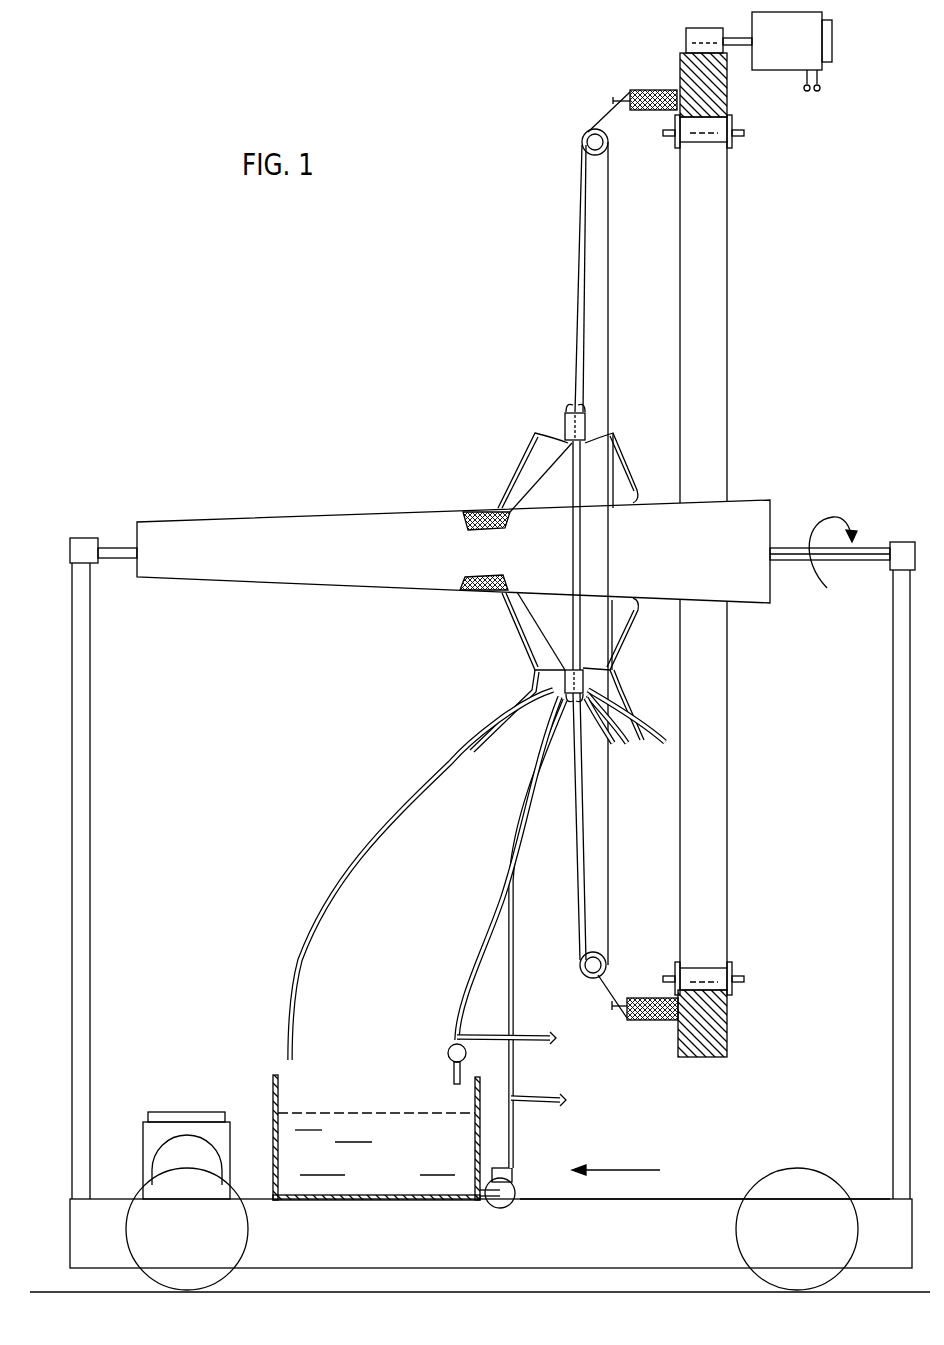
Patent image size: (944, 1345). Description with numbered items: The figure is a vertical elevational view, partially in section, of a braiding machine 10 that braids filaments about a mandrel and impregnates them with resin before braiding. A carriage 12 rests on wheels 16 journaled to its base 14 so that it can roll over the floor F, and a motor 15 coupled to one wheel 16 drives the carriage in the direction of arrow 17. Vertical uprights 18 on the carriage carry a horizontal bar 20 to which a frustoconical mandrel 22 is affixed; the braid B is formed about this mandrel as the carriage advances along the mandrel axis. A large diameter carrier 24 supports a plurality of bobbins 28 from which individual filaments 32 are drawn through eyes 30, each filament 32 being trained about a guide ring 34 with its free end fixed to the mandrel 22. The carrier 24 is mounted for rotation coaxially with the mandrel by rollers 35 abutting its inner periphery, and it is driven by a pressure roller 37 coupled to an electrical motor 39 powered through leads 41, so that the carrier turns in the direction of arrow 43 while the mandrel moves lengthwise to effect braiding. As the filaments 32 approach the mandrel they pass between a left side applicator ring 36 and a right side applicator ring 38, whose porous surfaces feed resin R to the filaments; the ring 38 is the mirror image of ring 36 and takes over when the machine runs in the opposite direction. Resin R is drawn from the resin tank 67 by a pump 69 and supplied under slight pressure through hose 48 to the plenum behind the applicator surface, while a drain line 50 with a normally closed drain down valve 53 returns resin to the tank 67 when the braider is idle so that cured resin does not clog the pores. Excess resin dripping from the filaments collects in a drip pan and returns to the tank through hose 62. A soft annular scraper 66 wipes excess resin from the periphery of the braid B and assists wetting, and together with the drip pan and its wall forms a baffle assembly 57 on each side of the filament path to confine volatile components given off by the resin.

The braiding machine 10 is at (388, 380).
The carriage 12 is at (66, 1229).
The base 14 is at (662, 1214).
The motor 15 is at (186, 1136).
The wheels 16 is at (232, 1226).
The arrow 17 is at (600, 1170).
The vertical uprights 18 is at (90, 924).
The horizontal bar 20 is at (795, 549).
The mandrel 22 is at (306, 526).
The carrier 24 is at (724, 322).
The bobbins 28 is at (648, 94).
The eyes 30 is at (612, 1010).
The filaments 32 is at (590, 130).
The guide ring 34 is at (606, 968).
The rollers 35 is at (712, 142).
The left side applicator ring 36 is at (540, 666).
The pressure roller 37 is at (690, 32).
The right side applicator ring 38 is at (598, 662).
The electrical motor 39 is at (805, 44).
The leads 41 is at (812, 92).
The arrow 43 is at (848, 518).
The hose 48 is at (512, 956).
The drain line 50 is at (463, 984).
The drain down valve 53 is at (447, 1053).
The baffle assembly 57 is at (520, 462).
The hose 62 is at (460, 752).
The scraper 66 is at (476, 603).
The resin tank 67 is at (273, 1092).
The pump 69 is at (505, 1210).
The braid B is at (468, 513).
The resin R is at (345, 1130).
The floor F is at (357, 1292).